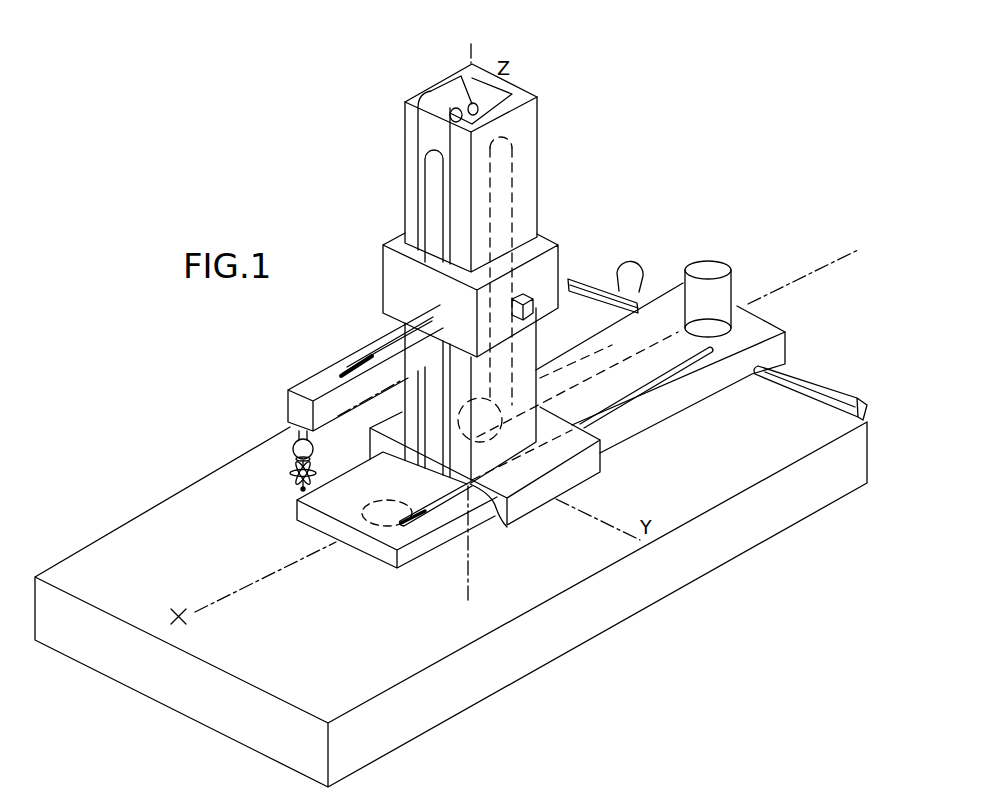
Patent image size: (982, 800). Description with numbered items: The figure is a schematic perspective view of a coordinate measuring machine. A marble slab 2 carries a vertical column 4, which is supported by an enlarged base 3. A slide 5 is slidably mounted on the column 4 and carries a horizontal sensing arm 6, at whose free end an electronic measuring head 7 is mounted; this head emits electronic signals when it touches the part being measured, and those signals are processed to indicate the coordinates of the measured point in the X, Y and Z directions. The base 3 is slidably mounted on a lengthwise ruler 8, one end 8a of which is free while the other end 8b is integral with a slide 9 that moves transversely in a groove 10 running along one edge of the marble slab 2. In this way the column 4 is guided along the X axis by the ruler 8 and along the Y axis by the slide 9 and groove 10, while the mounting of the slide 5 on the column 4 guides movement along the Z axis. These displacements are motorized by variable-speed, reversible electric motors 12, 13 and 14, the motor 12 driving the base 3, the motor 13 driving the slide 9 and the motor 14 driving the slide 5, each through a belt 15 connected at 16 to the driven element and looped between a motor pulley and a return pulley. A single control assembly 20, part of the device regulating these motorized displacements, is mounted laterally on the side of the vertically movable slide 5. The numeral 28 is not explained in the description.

The marble slab 2 is at (693, 498).
The enlarged base 3 is at (577, 476).
The vertical column 4 is at (528, 118).
The slide 5 is at (537, 245).
The horizontal sensing arm 6 is at (318, 384).
The electronic measuring head 7 is at (292, 462).
The lengthwise ruler 8 is at (620, 418).
The free end of ruler 8a is at (410, 553).
The other end of ruler 8b is at (757, 327).
The slide 9 is at (760, 364).
The groove 10 is at (805, 385).
The electric motor 12 is at (710, 272).
The electric motor 13 is at (628, 273).
The electric motor 14 is at (575, 406).
The belt 15 is at (513, 172).
The belt connection point 16 is at (493, 517).
The control assembly 20 is at (562, 263).
The reading head 28 is at (534, 310).